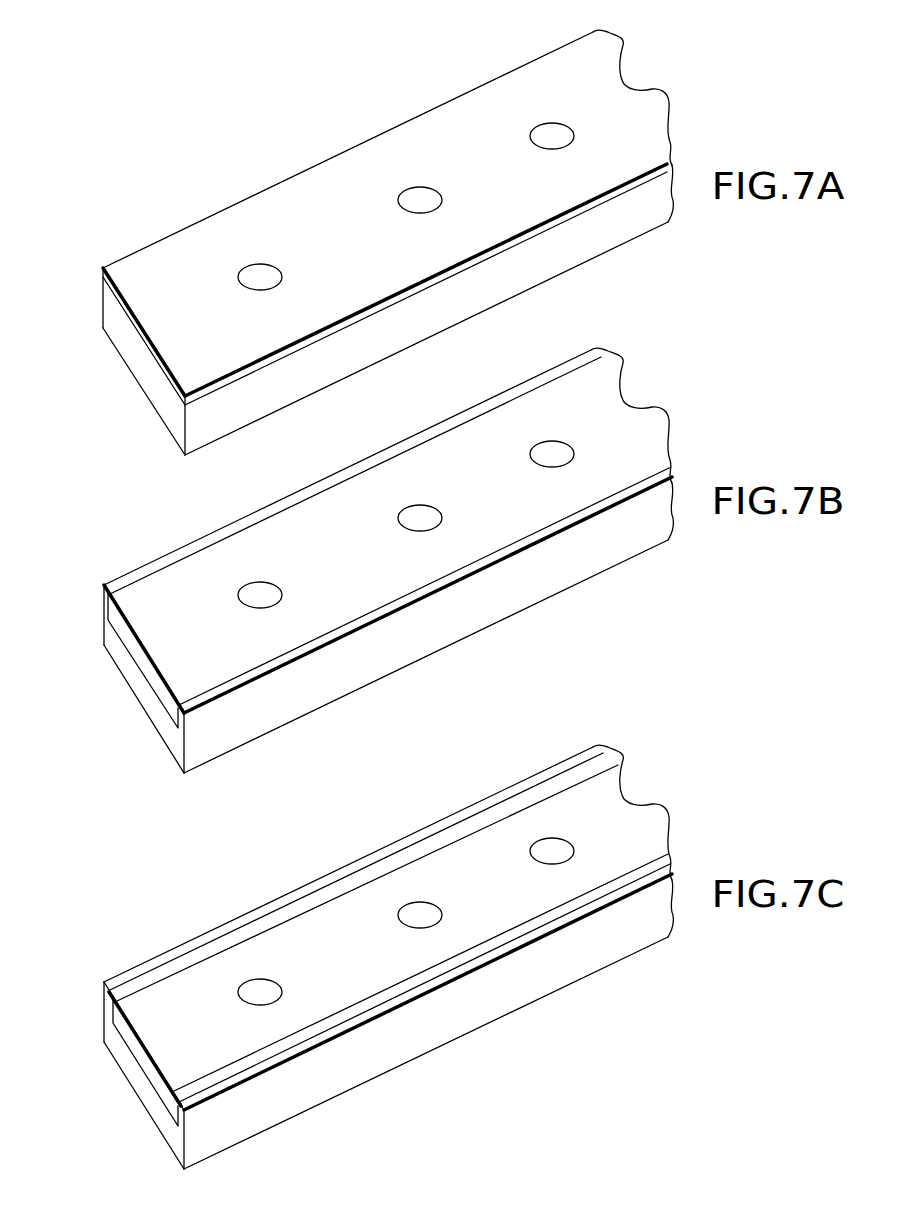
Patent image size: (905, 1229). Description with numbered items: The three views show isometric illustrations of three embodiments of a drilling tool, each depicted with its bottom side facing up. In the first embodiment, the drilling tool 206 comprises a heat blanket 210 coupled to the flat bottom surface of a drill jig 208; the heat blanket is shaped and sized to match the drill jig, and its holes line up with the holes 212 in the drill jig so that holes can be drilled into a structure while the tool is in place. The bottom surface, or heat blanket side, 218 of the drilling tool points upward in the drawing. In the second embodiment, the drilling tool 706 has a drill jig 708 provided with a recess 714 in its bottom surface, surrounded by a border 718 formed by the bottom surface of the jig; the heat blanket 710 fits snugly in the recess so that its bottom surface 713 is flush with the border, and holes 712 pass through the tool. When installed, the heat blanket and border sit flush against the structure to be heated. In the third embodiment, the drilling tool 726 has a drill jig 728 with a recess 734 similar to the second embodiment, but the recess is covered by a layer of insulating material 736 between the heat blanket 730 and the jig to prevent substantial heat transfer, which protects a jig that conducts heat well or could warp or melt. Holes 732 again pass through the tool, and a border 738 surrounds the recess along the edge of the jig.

In FIG. 7A, the drilling tool 206 is at (258, 118).
In FIG. 7A, the drill jig 208 is at (108, 313).
In FIG. 7A, the heat blanket 210 is at (163, 279).
In FIG. 7A, the holes 212 is at (543, 137).
In FIG. 7A, the bottom surface 218 is at (527, 69).
In FIG. 7B, the drilling tool 706 is at (100, 705).
In FIG. 7B, the drill jig 708 is at (106, 630).
In FIG. 7B, the heat blanket 710 is at (163, 597).
In FIG. 7B, the holes 712 is at (543, 455).
In FIG. 7B, the bottom surface 713 is at (607, 388).
In FIG. 7B, the recess 714 is at (118, 642).
In FIG. 7B, the border 718 is at (527, 386).
In FIG. 7C, the drilling tool 726 is at (258, 840).
In FIG. 7C, the drill jig 728 is at (106, 1025).
In FIG. 7C, the heat blanket 730 is at (163, 992).
In FIG. 7C, the holes 732 is at (543, 852).
In FIG. 7C, the recess 734 is at (118, 1037).
In FIG. 7C, the layer of insulating material 736 is at (483, 815).
In FIG. 7C, the raised rim 738 is at (527, 782).